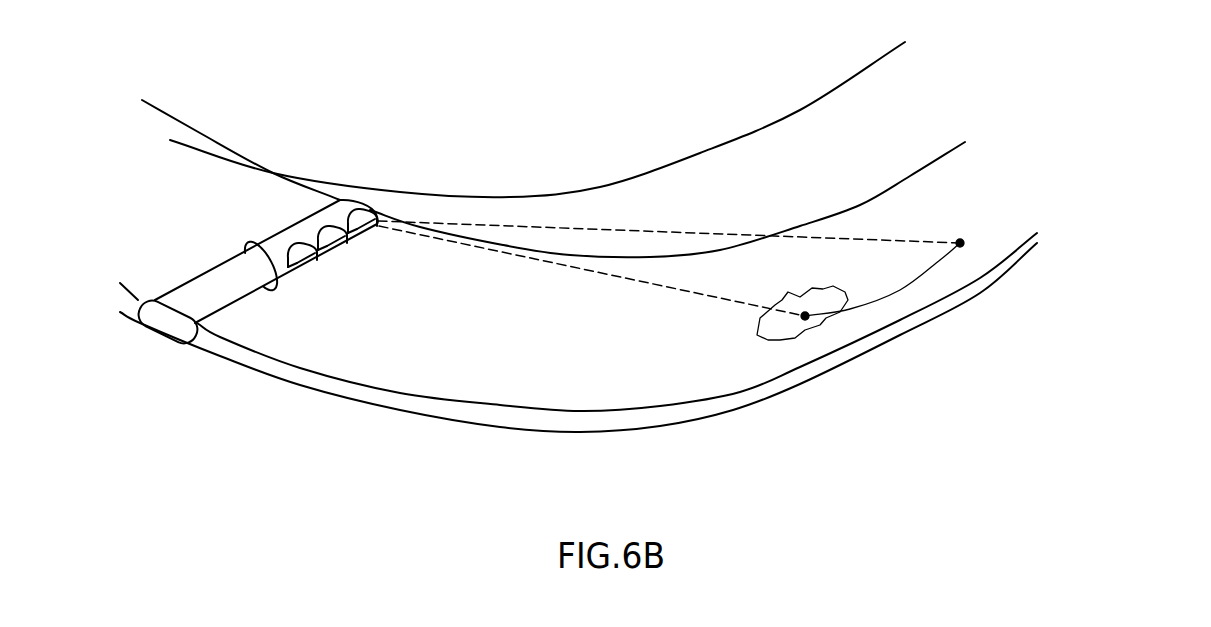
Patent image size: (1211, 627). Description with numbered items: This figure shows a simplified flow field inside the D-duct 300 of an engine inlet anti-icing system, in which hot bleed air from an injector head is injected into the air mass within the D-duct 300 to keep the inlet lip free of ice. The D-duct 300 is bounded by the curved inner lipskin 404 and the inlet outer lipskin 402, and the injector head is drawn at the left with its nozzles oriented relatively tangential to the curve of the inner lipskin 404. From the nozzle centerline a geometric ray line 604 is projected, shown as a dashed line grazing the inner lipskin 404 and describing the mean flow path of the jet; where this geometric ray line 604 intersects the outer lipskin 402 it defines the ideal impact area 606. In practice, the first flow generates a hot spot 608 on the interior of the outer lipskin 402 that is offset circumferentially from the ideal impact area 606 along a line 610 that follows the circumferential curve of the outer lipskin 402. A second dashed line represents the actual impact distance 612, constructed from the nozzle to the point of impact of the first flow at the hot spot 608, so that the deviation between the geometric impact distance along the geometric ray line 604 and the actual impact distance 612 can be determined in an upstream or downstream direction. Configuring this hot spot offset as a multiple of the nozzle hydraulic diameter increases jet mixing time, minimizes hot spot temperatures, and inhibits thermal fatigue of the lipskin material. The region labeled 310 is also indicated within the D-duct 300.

The D-duct 300 is at (655, 115).
The vessel inner wall 310 is at (910, 177).
The inner lipskin 404 is at (445, 197).
The outer lipskin 402 is at (660, 413).
The geometric ray line 604 is at (702, 233).
The ideal impact area 606 is at (963, 242).
The hot spot 608 is at (768, 338).
The line following the circumferential curve of the outer lipskin 610 is at (900, 290).
The actual impact distance 612 is at (652, 283).